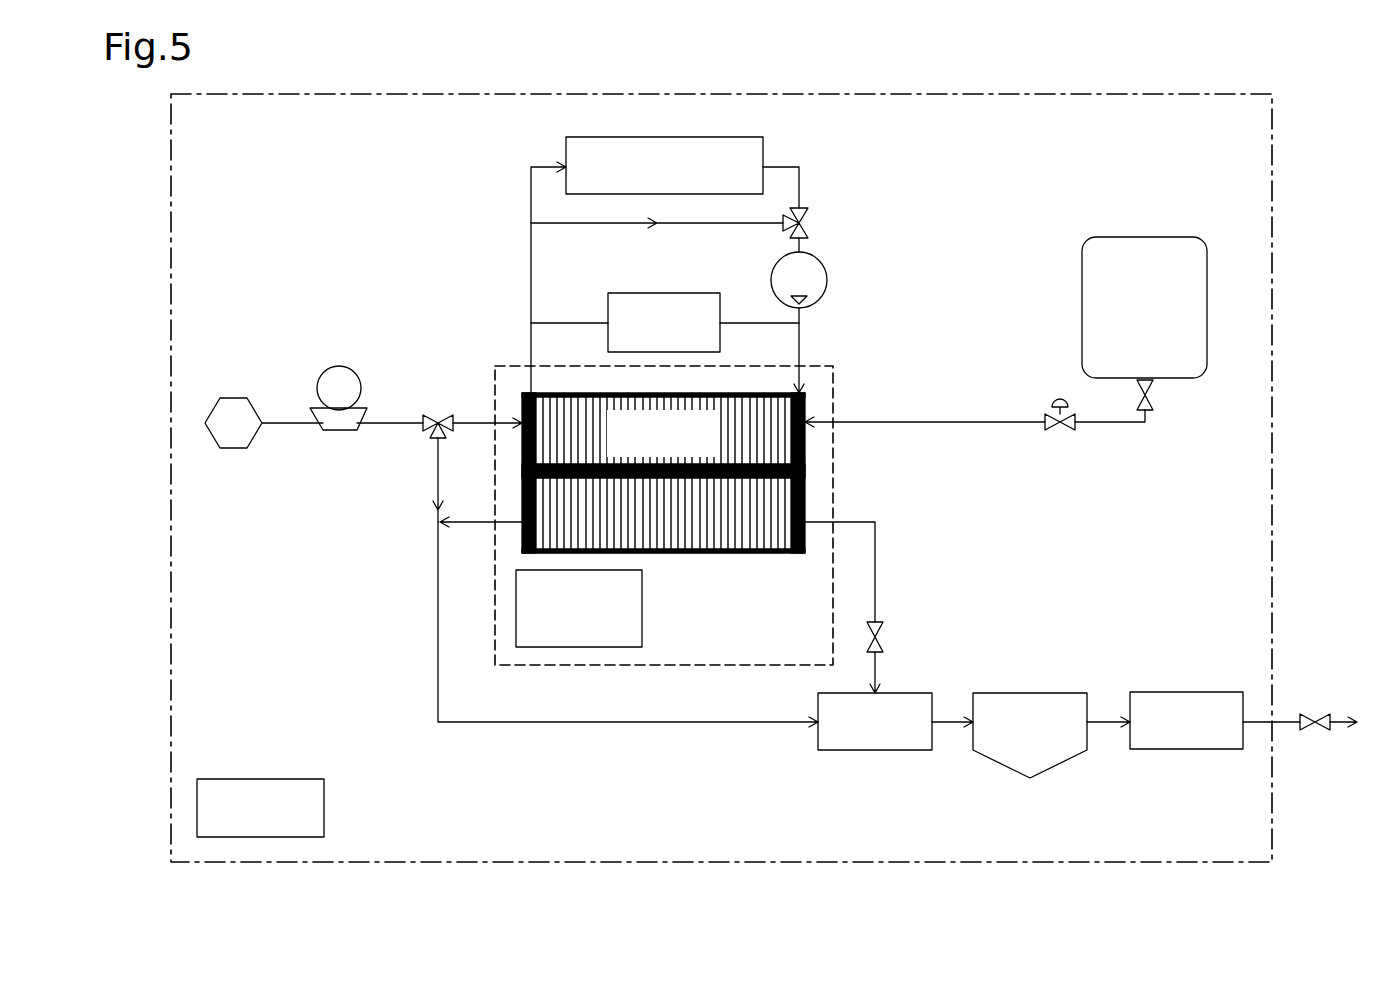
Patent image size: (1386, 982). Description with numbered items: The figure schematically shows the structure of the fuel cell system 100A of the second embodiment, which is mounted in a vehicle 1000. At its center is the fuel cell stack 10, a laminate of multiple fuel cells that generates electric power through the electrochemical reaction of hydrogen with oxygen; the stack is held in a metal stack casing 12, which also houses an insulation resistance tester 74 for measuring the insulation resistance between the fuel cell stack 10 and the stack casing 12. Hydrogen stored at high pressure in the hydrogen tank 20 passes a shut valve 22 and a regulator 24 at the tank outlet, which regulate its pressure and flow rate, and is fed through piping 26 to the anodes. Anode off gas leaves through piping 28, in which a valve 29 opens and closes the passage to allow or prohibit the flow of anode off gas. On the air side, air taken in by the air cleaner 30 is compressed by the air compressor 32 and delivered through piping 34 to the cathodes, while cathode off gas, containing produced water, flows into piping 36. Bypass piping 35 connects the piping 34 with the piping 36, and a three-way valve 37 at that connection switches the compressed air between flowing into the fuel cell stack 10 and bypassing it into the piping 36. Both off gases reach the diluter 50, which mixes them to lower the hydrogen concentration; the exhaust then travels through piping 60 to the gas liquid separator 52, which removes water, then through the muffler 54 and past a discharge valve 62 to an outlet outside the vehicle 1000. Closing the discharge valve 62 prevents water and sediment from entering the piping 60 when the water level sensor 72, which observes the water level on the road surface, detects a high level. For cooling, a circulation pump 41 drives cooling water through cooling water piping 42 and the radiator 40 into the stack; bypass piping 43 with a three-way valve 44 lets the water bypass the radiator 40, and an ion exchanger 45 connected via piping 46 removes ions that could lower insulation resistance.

The fuel cell system 100A is at (255, 167).
The vehicle 1000 is at (1273, 177).
The fuel cell stack 10 is at (760, 552).
The stack casing 12 is at (833, 477).
The hydrogen tank 20 is at (1207, 308).
The shut valve 22 is at (1150, 398).
The regulator 24 is at (1063, 428).
The piping 26 is at (963, 420).
The piping 28 is at (875, 562).
The valve 29 is at (878, 637).
The air cleaner 30 is at (237, 398).
The air compressor 32 is at (342, 367).
The piping 34 is at (398, 422).
The bypass piping 35 is at (438, 462).
The piping 36 is at (467, 520).
The three-way valve 37 is at (438, 418).
The radiator 40 is at (763, 150).
The circulation pump 41 is at (827, 280).
The cooling water piping 42 is at (530, 270).
The bypass piping 43 is at (598, 223).
The three-way valve 44 is at (805, 217).
The ion exchanger 45 is at (667, 293).
The piping 46 is at (735, 323).
The diluter 50 is at (872, 750).
The gas liquid separator 52 is at (1033, 693).
The muffler 54 is at (1188, 692).
The piping 60 is at (948, 718).
The discharge valve 62 is at (1310, 725).
The water level sensor 72 is at (242, 779).
The insulation resistance tester 74 is at (642, 607).